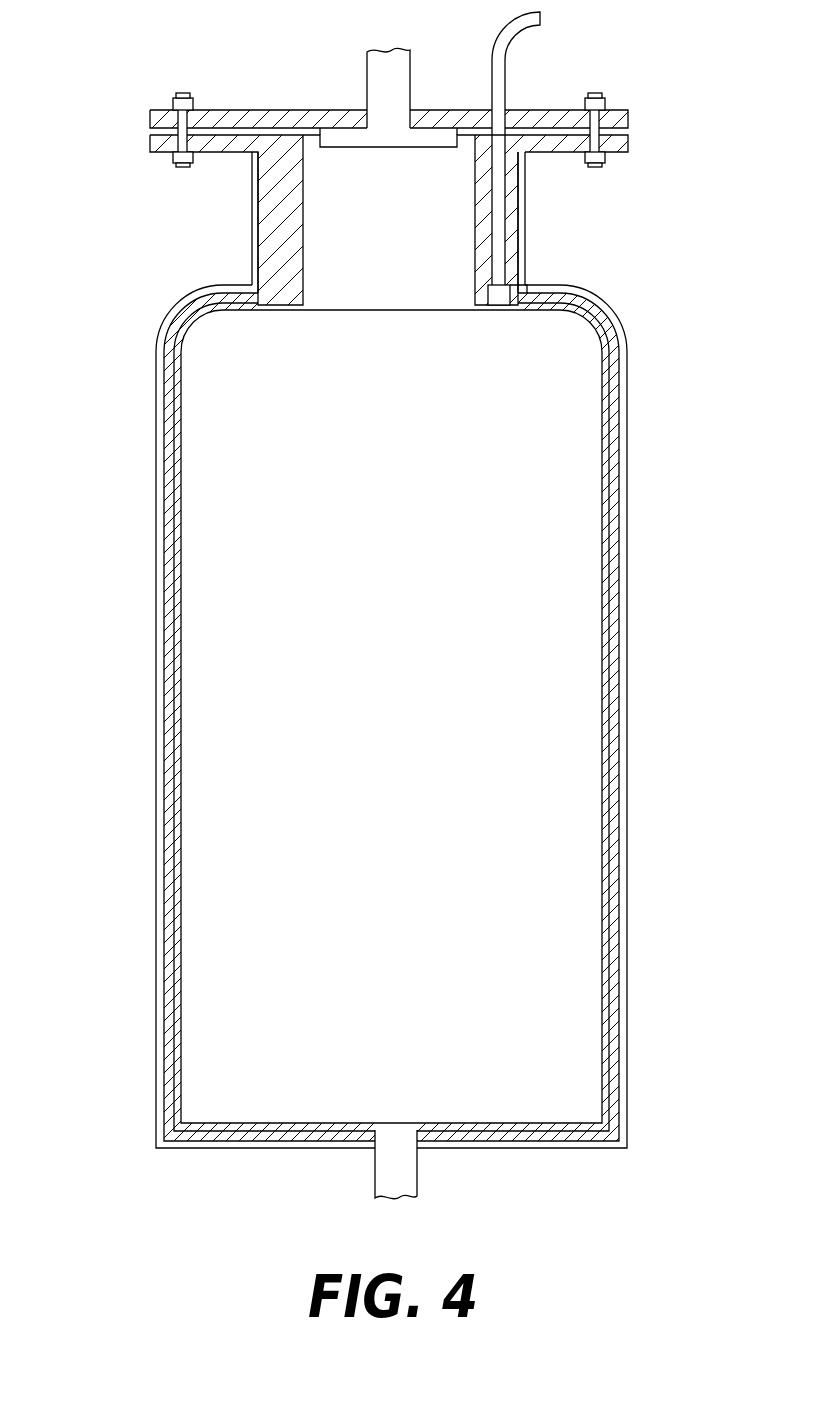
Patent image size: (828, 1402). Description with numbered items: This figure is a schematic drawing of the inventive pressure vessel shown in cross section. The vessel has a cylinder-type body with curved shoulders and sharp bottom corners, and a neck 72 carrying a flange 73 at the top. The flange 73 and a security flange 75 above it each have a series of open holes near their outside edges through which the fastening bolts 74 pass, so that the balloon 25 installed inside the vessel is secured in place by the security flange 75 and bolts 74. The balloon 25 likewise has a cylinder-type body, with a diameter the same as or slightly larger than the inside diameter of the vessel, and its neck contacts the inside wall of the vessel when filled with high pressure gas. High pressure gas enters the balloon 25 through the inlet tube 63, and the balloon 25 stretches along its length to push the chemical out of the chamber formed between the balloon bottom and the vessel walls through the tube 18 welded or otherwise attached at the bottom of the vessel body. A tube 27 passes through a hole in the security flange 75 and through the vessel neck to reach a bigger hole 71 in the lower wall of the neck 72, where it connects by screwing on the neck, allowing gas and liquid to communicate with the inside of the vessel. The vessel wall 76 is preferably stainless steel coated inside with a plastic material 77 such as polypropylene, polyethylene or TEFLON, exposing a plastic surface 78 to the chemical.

The tube 18 is at (378, 1182).
The balloon 25 is at (414, 716).
The tube 27 is at (507, 67).
The inlet tube 63 is at (378, 77).
The hole 71 is at (527, 280).
The neck 72 is at (251, 250).
The flange 73 is at (630, 142).
The fastening bolts 74 is at (183, 167).
The security flange 75 is at (235, 108).
The wall 76 is at (152, 605).
The plastic material 77 is at (166, 720).
The plastic surface 78 is at (170, 803).